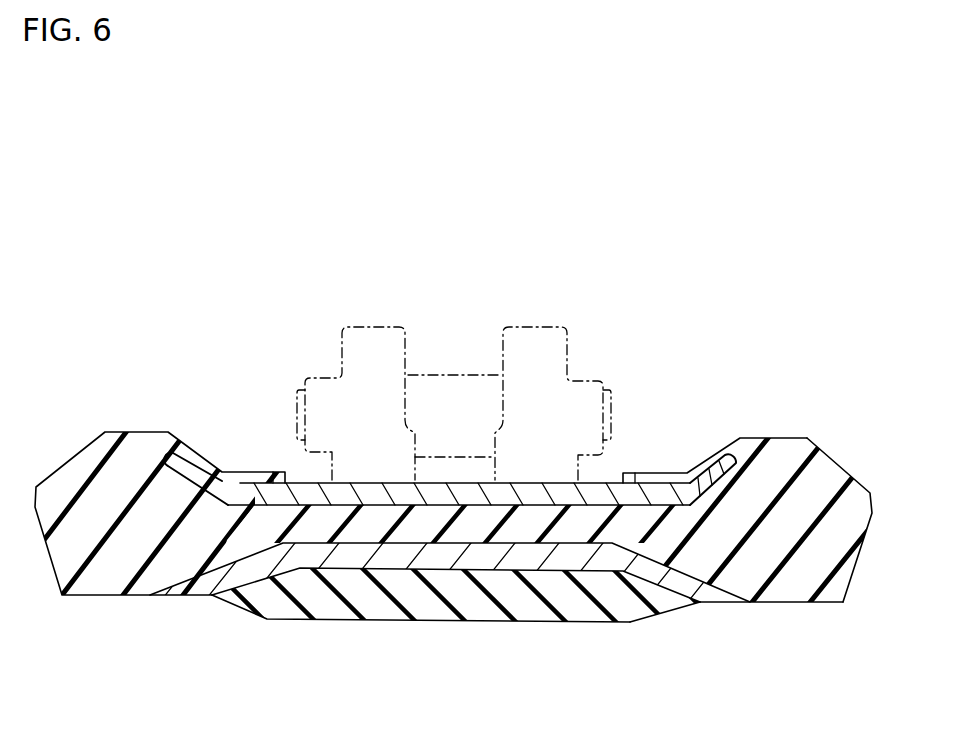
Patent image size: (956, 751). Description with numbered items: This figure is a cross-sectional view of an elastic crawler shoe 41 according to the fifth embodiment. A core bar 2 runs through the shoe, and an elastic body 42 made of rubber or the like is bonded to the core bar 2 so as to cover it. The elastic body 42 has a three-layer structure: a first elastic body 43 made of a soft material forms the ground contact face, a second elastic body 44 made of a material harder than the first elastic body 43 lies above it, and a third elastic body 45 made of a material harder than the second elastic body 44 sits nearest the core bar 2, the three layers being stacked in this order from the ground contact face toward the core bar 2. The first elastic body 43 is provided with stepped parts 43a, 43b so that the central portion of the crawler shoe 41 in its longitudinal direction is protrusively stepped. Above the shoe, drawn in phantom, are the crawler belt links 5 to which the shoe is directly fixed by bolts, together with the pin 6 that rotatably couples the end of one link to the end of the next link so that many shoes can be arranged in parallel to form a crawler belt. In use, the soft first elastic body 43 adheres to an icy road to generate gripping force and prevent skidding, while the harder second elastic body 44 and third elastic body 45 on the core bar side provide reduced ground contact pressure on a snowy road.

The core bar 2 is at (615, 488).
The crawler belt links 5 is at (343, 362).
The pin 6 is at (443, 375).
The elastic crawler shoe 41 is at (730, 416).
The elastic body 42 is at (857, 587).
The first elastic body 43 is at (285, 607).
The stepped part 43a is at (230, 603).
The stepped part 43b is at (667, 608).
The second elastic body 44 is at (740, 600).
The third elastic body 45 is at (103, 578).